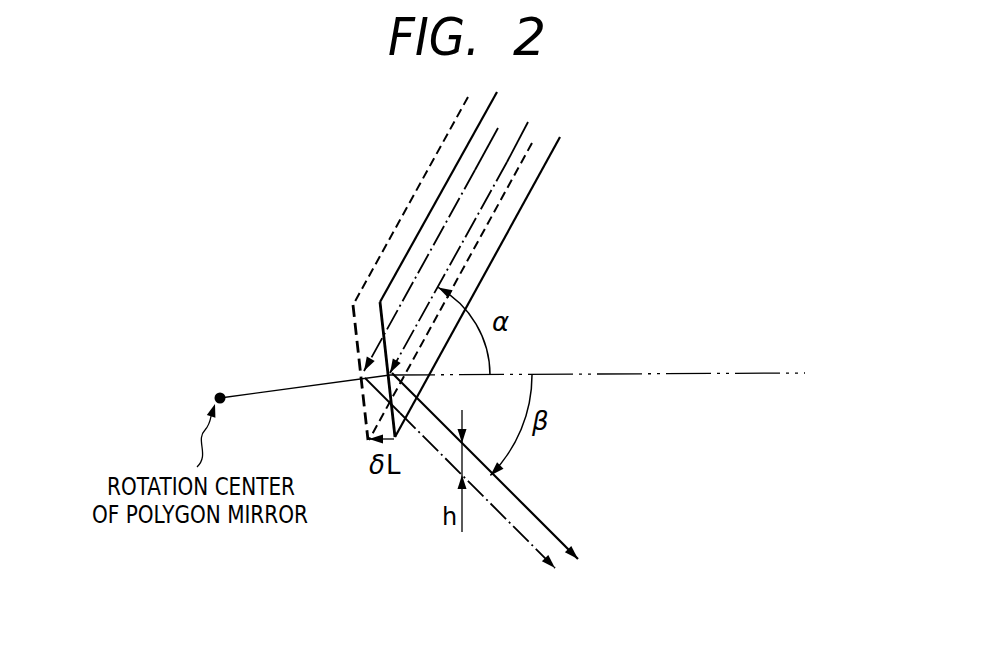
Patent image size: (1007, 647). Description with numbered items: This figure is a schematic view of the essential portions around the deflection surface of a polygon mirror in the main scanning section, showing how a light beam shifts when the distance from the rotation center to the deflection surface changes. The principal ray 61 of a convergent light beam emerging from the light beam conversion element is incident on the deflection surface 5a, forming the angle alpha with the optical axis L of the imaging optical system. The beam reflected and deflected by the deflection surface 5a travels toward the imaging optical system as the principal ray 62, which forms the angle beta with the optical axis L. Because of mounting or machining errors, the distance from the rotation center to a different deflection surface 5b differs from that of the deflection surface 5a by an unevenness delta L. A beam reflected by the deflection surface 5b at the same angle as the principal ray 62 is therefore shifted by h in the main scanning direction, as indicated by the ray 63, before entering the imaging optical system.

The principal ray of the convergent light beam 61 is at (546, 118).
The deflection surface 5a is at (368, 308).
The deflection surface 5b is at (338, 320).
The principal ray of the reflected light beam 62 is at (552, 511).
The ray 63 is at (510, 541).
The optical axis L is at (720, 360).